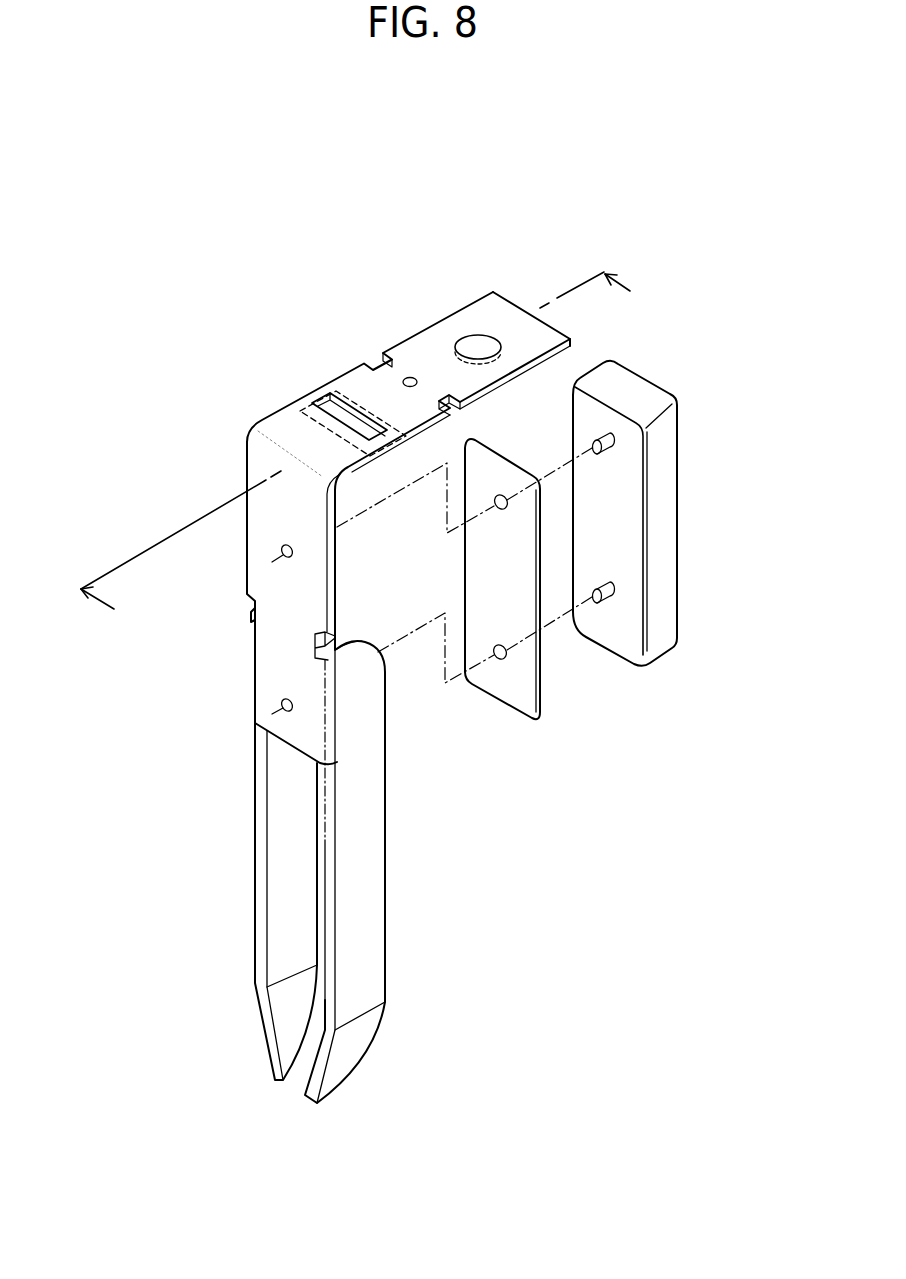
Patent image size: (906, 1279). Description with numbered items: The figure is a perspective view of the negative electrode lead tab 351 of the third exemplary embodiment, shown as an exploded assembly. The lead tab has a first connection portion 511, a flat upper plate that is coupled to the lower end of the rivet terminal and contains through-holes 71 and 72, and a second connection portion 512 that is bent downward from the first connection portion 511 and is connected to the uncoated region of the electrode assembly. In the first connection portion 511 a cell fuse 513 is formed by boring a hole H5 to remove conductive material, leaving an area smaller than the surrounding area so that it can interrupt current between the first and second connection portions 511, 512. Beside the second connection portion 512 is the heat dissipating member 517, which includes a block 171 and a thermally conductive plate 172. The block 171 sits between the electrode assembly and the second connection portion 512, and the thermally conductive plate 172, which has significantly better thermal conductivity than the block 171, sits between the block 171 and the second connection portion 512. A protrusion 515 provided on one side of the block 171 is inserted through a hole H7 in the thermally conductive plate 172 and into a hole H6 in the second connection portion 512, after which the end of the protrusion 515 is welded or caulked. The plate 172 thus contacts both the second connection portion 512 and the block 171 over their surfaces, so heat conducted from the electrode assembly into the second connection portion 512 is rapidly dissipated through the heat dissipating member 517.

The negative electrode lead tab 351 is at (424, 168).
The first connection portion 511 is at (347, 373).
The second connection portion 512 is at (250, 686).
The cell fuse 513 is at (316, 392).
The through-hole 71 is at (465, 338).
The through-hole 72 is at (410, 377).
The hole H5 is at (346, 420).
The hole H6 is at (283, 551).
The hole H7 is at (494, 508).
The block 171 is at (625, 637).
The thermally conductive plate 172 is at (523, 698).
The protrusion 515 is at (612, 447).
The heat dissipating member 517 is at (627, 808).